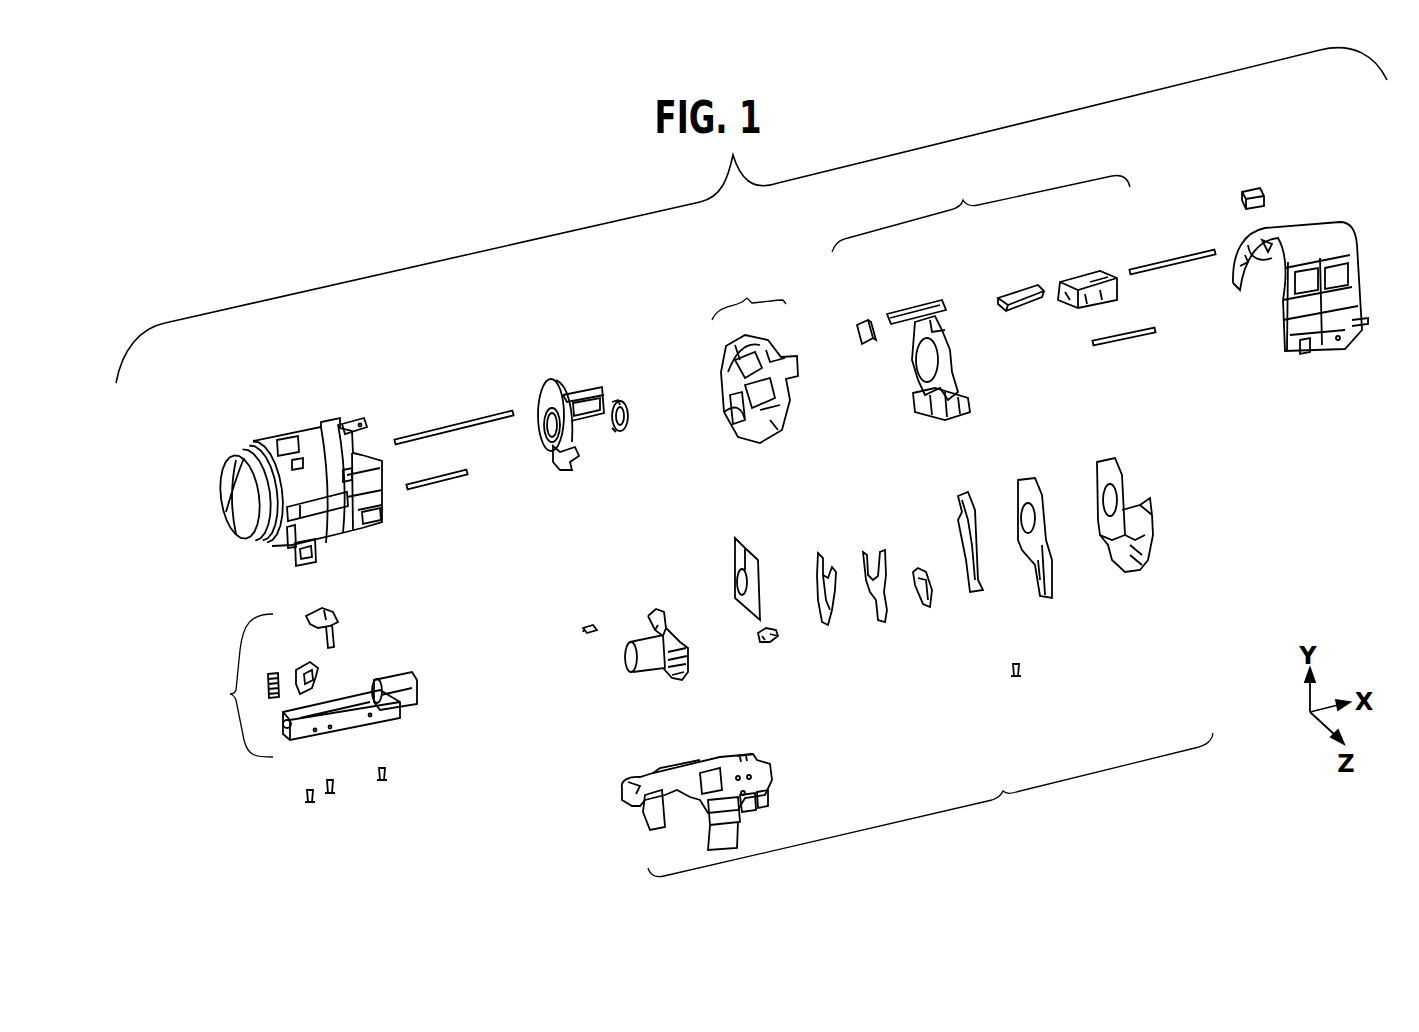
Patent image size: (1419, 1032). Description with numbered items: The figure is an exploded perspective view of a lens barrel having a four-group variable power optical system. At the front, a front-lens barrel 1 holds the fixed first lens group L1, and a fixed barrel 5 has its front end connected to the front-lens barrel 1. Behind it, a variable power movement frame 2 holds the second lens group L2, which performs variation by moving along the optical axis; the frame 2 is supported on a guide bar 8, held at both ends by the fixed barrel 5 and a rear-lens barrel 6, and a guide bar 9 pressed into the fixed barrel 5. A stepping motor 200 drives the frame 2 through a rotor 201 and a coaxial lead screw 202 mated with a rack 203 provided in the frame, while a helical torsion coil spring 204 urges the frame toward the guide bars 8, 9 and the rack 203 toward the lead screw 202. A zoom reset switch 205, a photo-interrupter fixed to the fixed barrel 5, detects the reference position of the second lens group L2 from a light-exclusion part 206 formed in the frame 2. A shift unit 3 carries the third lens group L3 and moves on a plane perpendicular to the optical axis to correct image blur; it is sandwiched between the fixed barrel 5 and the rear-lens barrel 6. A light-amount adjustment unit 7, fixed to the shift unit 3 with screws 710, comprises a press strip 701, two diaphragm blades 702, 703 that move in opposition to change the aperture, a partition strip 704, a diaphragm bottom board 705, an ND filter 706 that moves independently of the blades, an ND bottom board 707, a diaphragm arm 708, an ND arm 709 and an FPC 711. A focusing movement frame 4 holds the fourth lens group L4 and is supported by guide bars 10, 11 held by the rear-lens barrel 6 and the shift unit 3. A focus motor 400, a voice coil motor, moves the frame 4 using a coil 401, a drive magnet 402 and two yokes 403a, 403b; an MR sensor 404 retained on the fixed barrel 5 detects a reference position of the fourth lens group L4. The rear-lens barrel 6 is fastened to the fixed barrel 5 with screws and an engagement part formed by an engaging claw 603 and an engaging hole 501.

The front-lens barrel 1 is at (236, 450).
The fixed barrel 5 is at (300, 430).
The engaging hole 501 is at (355, 424).
The first lens group L1 is at (250, 527).
The guide bar 8 is at (468, 422).
The guide bar 9 is at (450, 490).
The variable power movement frame 2 is at (540, 398).
The second lens group L2 is at (540, 442).
The light-exclusion part 206 is at (556, 472).
The shift unit 3 is at (755, 357).
The third lens group L3 is at (742, 428).
The focus motor 400 is at (981, 318).
The yoke 403a is at (856, 318).
The focusing movement frame 4 is at (936, 305).
The fourth lens group L4 is at (915, 368).
The drive magnet 402 is at (1002, 292).
The yoke 403b is at (1072, 272).
The coil 401 is at (1120, 298).
The guide bar 10 is at (1163, 256).
The guide bar 11 is at (1140, 342).
The MR sensor 404 is at (1250, 190).
The rear-lens barrel 6 is at (1320, 234).
The engaging claw 603 is at (1266, 240).
The stepping motor 200 is at (338, 686).
The rotor 201 is at (416, 689).
The lead screw 202 is at (362, 690).
The rack 203 is at (302, 665).
The helical torsion coil spring 204 is at (270, 672).
The zoom reset switch 205 is at (335, 612).
The light-amount adjustment unit 7 is at (898, 667).
The press strip 701 is at (742, 612).
The diaphragm blade 702 is at (880, 626).
The diaphragm blade 703 is at (985, 592).
The partition strip 704 is at (1052, 594).
The diaphragm bottom board 705 is at (668, 680).
The ND filter 706 is at (828, 628).
The ND bottom board 707 is at (1136, 580).
The diaphragm arm 708 is at (770, 645).
The ND arm 709 is at (932, 610).
The screws 710 is at (1020, 680).
The FPC 711 is at (775, 781).